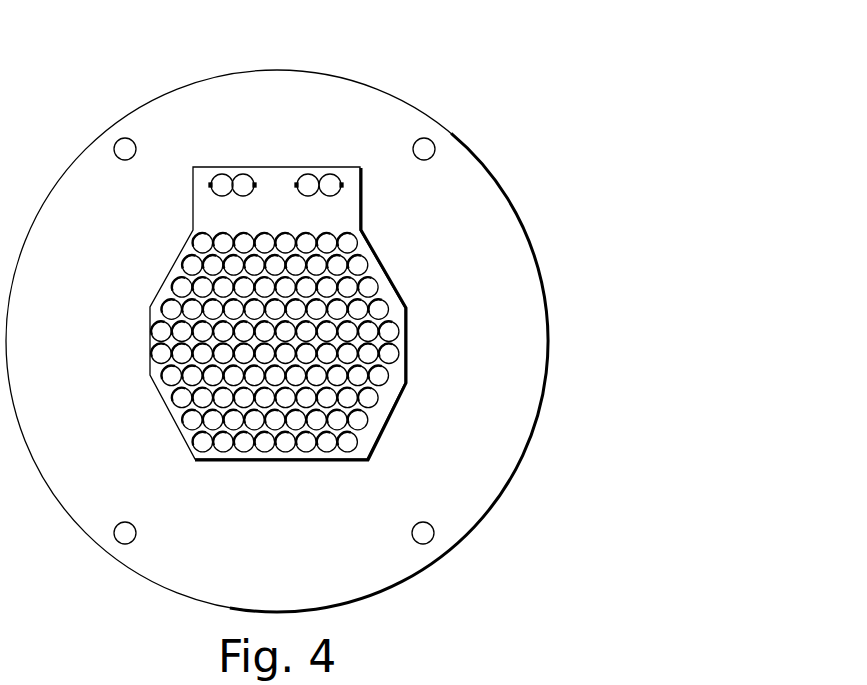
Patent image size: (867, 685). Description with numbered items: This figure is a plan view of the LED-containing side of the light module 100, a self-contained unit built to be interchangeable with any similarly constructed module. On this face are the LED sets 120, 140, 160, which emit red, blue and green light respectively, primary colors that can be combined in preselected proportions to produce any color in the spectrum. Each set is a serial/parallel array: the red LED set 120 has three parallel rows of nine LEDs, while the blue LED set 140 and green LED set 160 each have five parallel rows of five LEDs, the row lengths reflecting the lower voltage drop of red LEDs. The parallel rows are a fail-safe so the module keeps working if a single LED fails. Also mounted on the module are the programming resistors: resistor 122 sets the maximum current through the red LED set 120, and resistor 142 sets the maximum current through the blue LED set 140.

The light module 100 is at (287, 70).
The LED set 120 is at (360, 267).
The resistor 122 is at (229, 176).
The LED set 140 is at (309, 313).
The resistor 142 is at (316, 176).
The LED set 160 is at (296, 313).